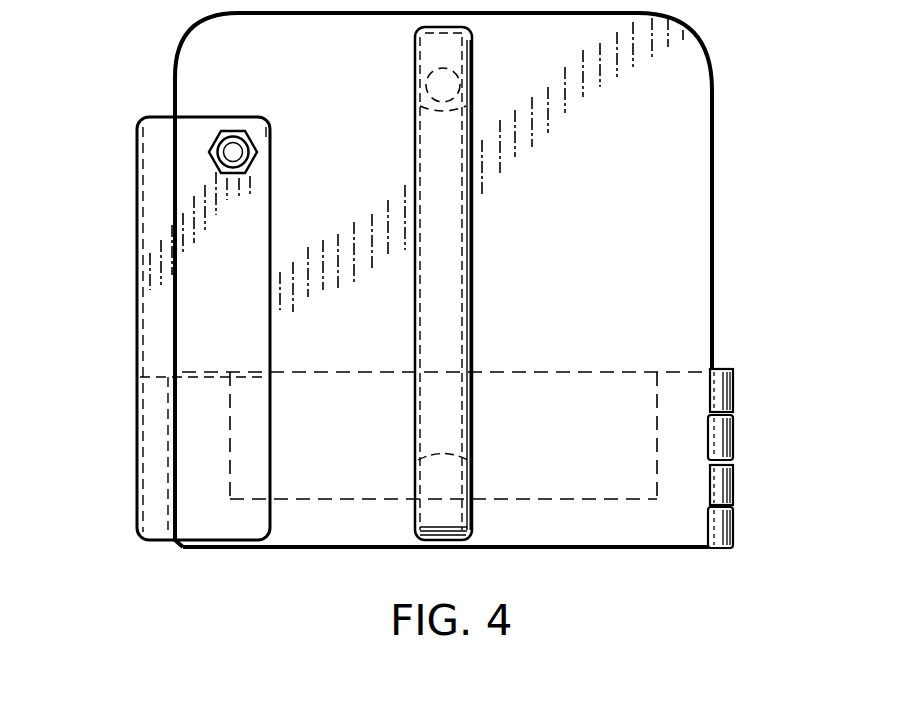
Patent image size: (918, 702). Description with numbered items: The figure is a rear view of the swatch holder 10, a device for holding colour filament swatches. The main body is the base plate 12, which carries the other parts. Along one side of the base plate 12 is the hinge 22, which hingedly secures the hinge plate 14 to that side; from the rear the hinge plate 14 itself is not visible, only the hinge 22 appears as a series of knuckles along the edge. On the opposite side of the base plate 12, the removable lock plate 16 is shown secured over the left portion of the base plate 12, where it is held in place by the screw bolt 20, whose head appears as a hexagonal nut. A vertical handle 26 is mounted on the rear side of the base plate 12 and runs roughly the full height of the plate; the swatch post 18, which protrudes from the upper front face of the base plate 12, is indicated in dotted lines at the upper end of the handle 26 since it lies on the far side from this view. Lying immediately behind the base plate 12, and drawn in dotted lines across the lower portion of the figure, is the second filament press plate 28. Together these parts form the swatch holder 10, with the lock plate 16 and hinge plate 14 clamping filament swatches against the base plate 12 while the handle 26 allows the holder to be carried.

The swatch holder 10 is at (732, 258).
The base plate 12 is at (685, 78).
The hinge plate 14 is at (681, 372).
The removable lock plate 16 is at (134, 322).
The swatch post 18 is at (447, 78).
The screw bolt 20 is at (233, 152).
The hinge 22 is at (735, 448).
The vertical handle 26 is at (472, 240).
The second filament press plate 28 is at (538, 393).